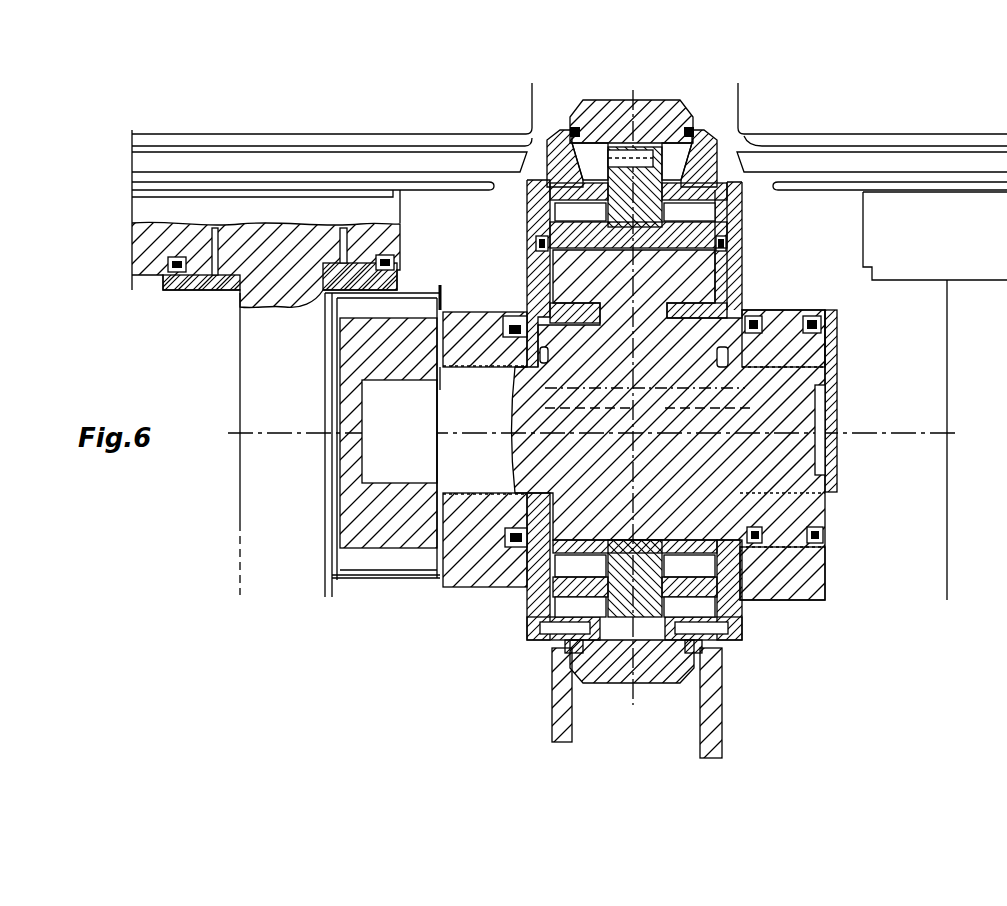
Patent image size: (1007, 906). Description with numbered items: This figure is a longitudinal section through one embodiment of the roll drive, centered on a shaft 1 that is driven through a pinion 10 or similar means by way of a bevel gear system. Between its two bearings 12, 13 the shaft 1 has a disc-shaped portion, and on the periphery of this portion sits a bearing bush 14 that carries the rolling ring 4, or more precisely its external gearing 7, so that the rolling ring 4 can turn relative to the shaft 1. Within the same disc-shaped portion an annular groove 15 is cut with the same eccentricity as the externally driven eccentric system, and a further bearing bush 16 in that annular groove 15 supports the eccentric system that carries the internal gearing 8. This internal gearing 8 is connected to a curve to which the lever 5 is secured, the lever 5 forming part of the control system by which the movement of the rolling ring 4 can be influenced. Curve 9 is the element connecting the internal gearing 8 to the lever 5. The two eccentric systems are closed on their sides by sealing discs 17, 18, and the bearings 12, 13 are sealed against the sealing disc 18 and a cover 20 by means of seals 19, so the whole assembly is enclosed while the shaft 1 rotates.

The shaft 1 is at (802, 437).
The rolling ring 4 is at (613, 108).
The lever 5 is at (713, 687).
The external gearing 7 is at (697, 563).
The internal gearing 8 is at (573, 608).
The curve 9 is at (530, 610).
The pinion 10 is at (365, 560).
The bearing 12 is at (808, 568).
The bearing 13 is at (467, 567).
The bearing bush 14 is at (540, 241).
The annular groove 15 is at (573, 300).
The further bearing bush 16 is at (724, 309).
The sealing disc 17 is at (704, 146).
The sealing disc 18 is at (730, 250).
The seals 19 is at (512, 553).
The cover 20 is at (830, 403).